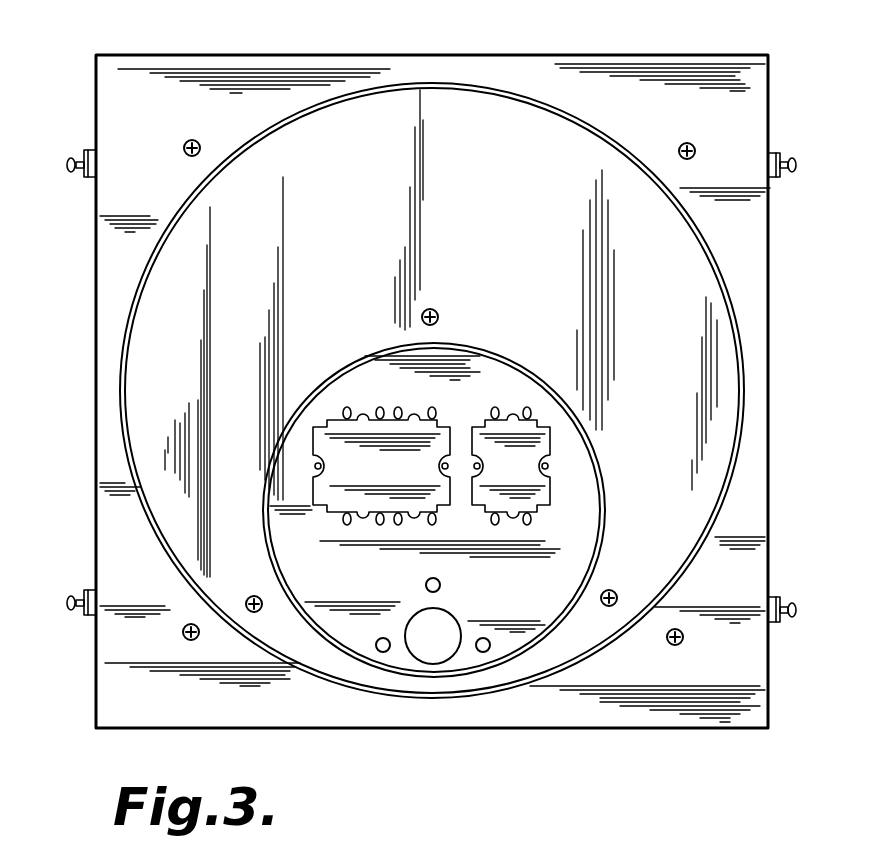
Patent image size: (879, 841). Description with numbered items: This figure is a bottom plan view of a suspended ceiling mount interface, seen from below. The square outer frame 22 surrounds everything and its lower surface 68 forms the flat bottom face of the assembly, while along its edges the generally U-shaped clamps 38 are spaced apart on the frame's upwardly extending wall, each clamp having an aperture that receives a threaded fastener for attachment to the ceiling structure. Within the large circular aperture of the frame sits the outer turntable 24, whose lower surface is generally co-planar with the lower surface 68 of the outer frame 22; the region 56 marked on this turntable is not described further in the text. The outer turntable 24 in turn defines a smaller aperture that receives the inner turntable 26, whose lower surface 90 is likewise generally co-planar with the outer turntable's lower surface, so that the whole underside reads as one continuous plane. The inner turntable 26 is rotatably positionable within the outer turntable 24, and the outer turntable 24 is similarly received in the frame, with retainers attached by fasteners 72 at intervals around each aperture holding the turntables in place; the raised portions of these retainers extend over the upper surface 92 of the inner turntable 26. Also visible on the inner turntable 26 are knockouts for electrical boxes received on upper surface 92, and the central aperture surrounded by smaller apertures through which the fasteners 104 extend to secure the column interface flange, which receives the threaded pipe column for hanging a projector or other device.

The outer frame 22 is at (740, 113).
The outer turntable 24 is at (692, 305).
The inner turntable 26 is at (513, 635).
The clamp 38 is at (87, 178).
The plate area within circle 56 is at (543, 288).
The lower surface of outer frame 68 is at (673, 124).
The fastener 72 is at (192, 139).
The lower surface of inner turntable 90 is at (511, 594).
The upper surface of inner turntable 92 is at (533, 473).
The fastener 104 is at (424, 585).